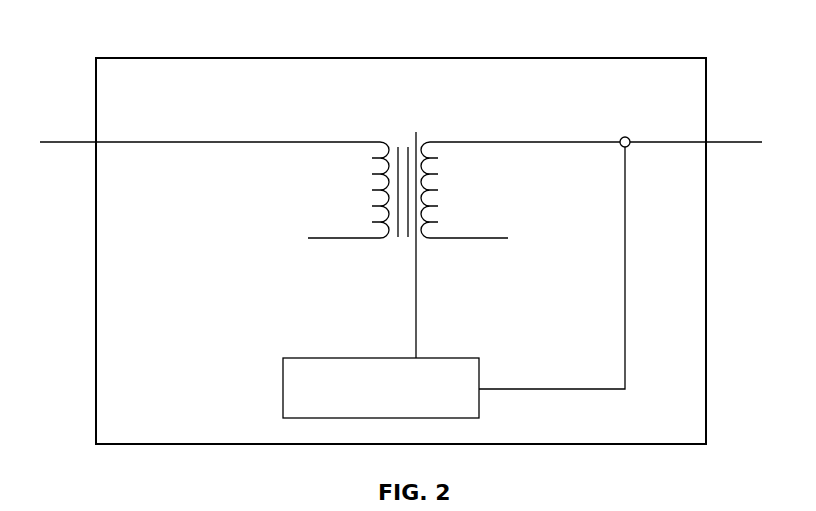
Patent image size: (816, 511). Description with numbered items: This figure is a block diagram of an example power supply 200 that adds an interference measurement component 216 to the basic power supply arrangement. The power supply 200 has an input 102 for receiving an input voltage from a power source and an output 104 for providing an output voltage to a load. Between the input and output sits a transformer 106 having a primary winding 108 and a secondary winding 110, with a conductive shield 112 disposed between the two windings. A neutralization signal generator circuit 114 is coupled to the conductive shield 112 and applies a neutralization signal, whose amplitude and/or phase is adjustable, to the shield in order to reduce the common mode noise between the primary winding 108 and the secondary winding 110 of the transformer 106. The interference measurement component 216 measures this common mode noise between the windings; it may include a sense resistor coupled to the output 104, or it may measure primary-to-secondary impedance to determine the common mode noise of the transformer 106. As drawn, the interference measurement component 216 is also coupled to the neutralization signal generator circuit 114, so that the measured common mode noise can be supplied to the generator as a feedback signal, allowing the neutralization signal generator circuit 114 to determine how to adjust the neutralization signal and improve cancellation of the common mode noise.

The power supply 200 is at (248, 50).
The input 102 is at (70, 142).
The output 104 is at (732, 140).
The transformer 106 is at (408, 181).
The primary winding 108 is at (378, 240).
The secondary winding 110 is at (438, 240).
The conductive shield 112 is at (418, 133).
The neutralization signal generator circuit 114 is at (423, 357).
The interference measurement component 216 is at (627, 138).